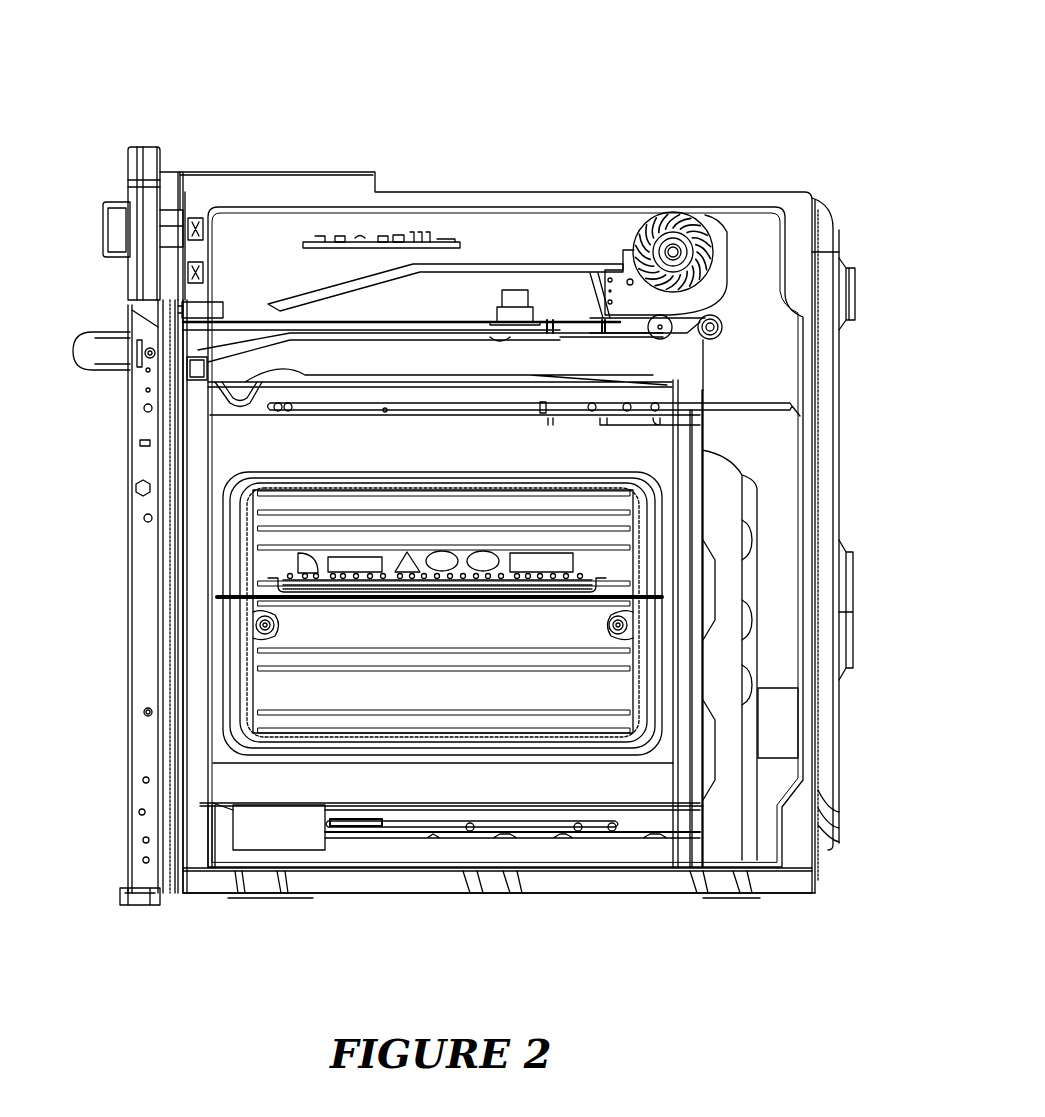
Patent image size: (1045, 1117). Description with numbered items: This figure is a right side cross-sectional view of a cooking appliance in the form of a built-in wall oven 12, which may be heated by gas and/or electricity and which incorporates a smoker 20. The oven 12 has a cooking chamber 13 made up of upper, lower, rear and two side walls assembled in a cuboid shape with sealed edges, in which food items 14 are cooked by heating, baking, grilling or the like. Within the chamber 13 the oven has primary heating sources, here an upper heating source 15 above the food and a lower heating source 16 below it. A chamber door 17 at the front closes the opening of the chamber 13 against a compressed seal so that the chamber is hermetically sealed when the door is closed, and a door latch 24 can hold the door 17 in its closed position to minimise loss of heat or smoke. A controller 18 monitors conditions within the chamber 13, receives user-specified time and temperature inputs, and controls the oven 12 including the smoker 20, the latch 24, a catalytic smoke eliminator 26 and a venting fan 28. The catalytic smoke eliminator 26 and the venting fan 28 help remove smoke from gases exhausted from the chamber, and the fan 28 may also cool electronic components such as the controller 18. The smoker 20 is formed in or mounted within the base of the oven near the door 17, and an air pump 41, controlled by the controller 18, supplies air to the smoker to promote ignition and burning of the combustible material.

The oven 12 is at (517, 125).
The cooking chamber 13 is at (268, 520).
The food items 14 is at (297, 565).
The upper heating source 15 is at (660, 407).
The lower heating source 16 is at (618, 828).
The chamber door 17 is at (140, 603).
The controller 18 is at (308, 247).
The smoker 20 is at (263, 848).
The door latch 24 is at (175, 308).
The catalytic smoke eliminator 26 is at (530, 313).
The venting fan 28 is at (718, 247).
The air pump 41 is at (808, 738).